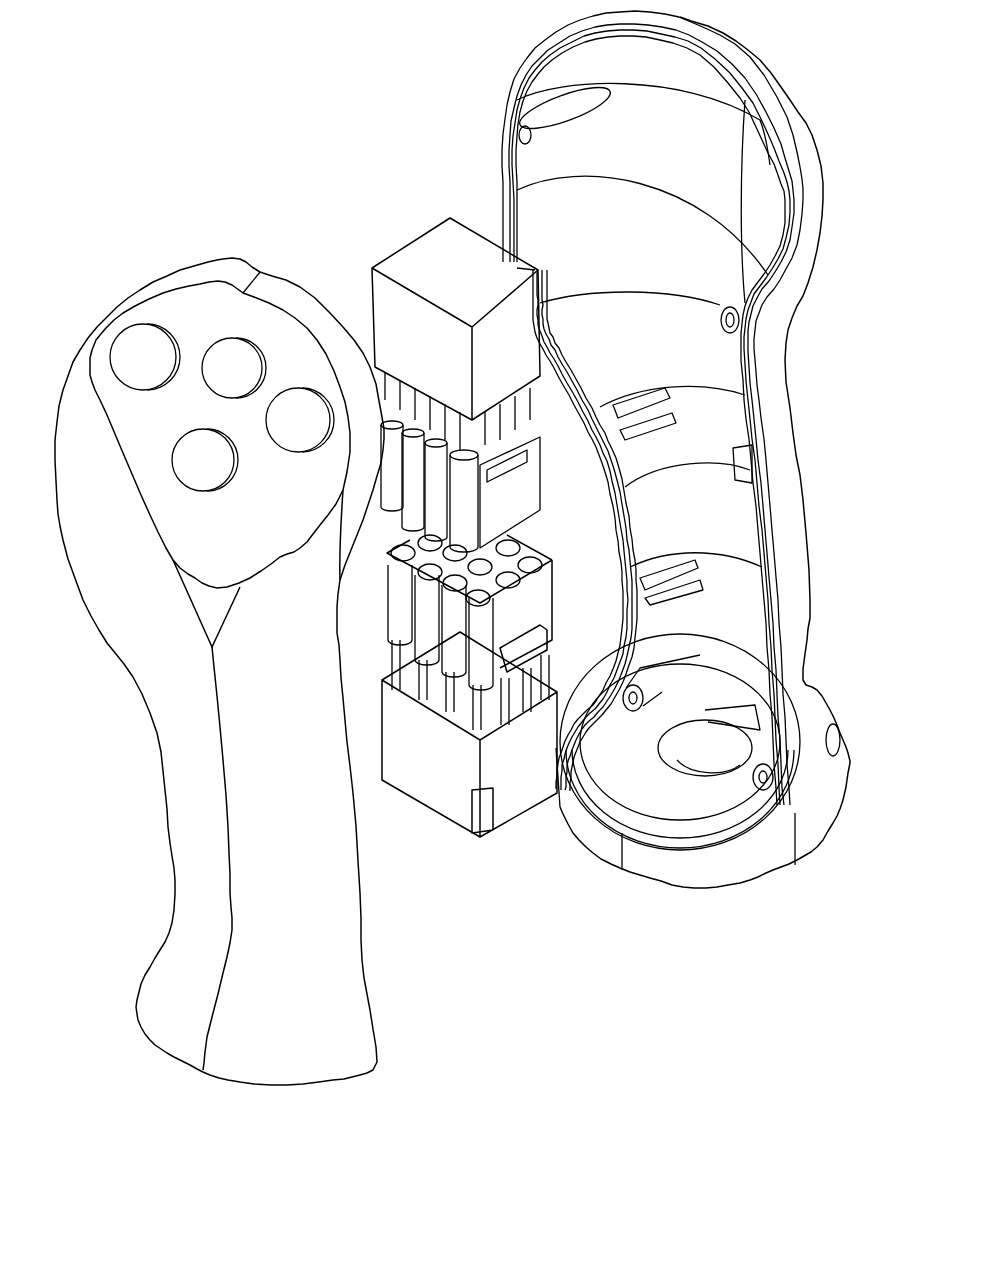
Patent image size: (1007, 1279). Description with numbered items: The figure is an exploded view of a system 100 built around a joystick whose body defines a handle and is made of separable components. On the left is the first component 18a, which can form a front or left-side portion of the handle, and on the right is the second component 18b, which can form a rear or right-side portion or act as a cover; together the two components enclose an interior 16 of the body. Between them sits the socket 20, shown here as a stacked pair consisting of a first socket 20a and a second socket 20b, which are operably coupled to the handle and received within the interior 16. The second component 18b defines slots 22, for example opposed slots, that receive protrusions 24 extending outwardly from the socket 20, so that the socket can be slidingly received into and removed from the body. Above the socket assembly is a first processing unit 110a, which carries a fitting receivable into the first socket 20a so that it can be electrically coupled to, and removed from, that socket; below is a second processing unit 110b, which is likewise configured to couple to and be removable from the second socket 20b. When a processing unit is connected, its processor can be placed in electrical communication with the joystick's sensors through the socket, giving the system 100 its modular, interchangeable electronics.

The system 100 is at (147, 87).
The interior 16 is at (559, 196).
The first component 18a is at (150, 652).
The second component 18b is at (540, 92).
The socket 20 is at (423, 513).
The first socket 20a is at (495, 510).
The second socket 20b is at (398, 603).
The slot 22 is at (643, 425).
The protrusion 24 is at (540, 472).
The first processing unit 110a is at (373, 267).
The second processing unit 110b is at (470, 795).